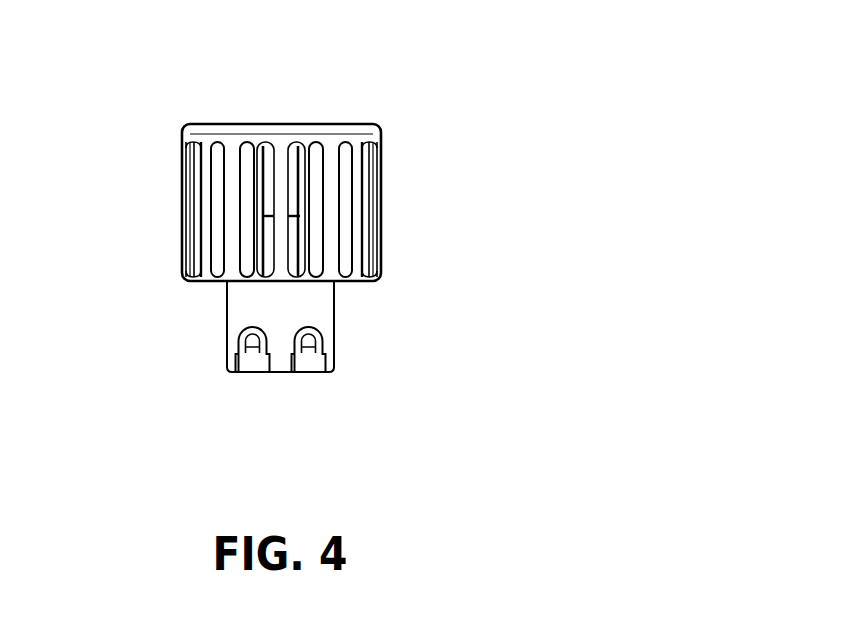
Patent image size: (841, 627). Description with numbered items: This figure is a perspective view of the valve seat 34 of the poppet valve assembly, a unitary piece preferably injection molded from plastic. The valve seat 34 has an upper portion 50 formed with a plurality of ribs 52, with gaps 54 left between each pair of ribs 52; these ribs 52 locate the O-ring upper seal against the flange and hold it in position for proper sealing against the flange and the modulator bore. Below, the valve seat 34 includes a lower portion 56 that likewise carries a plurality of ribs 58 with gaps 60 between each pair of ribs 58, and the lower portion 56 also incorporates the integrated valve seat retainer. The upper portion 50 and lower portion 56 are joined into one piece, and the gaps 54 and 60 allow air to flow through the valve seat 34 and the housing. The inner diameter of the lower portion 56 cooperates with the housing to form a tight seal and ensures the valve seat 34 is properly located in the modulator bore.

The valve seat 34 is at (383, 188).
The upper portion 50 is at (185, 138).
The ribs 52 is at (217, 177).
The gaps 54 is at (231, 175).
The lower portion 56 is at (332, 312).
The ribs 58 is at (292, 375).
The gaps 60 is at (263, 365).